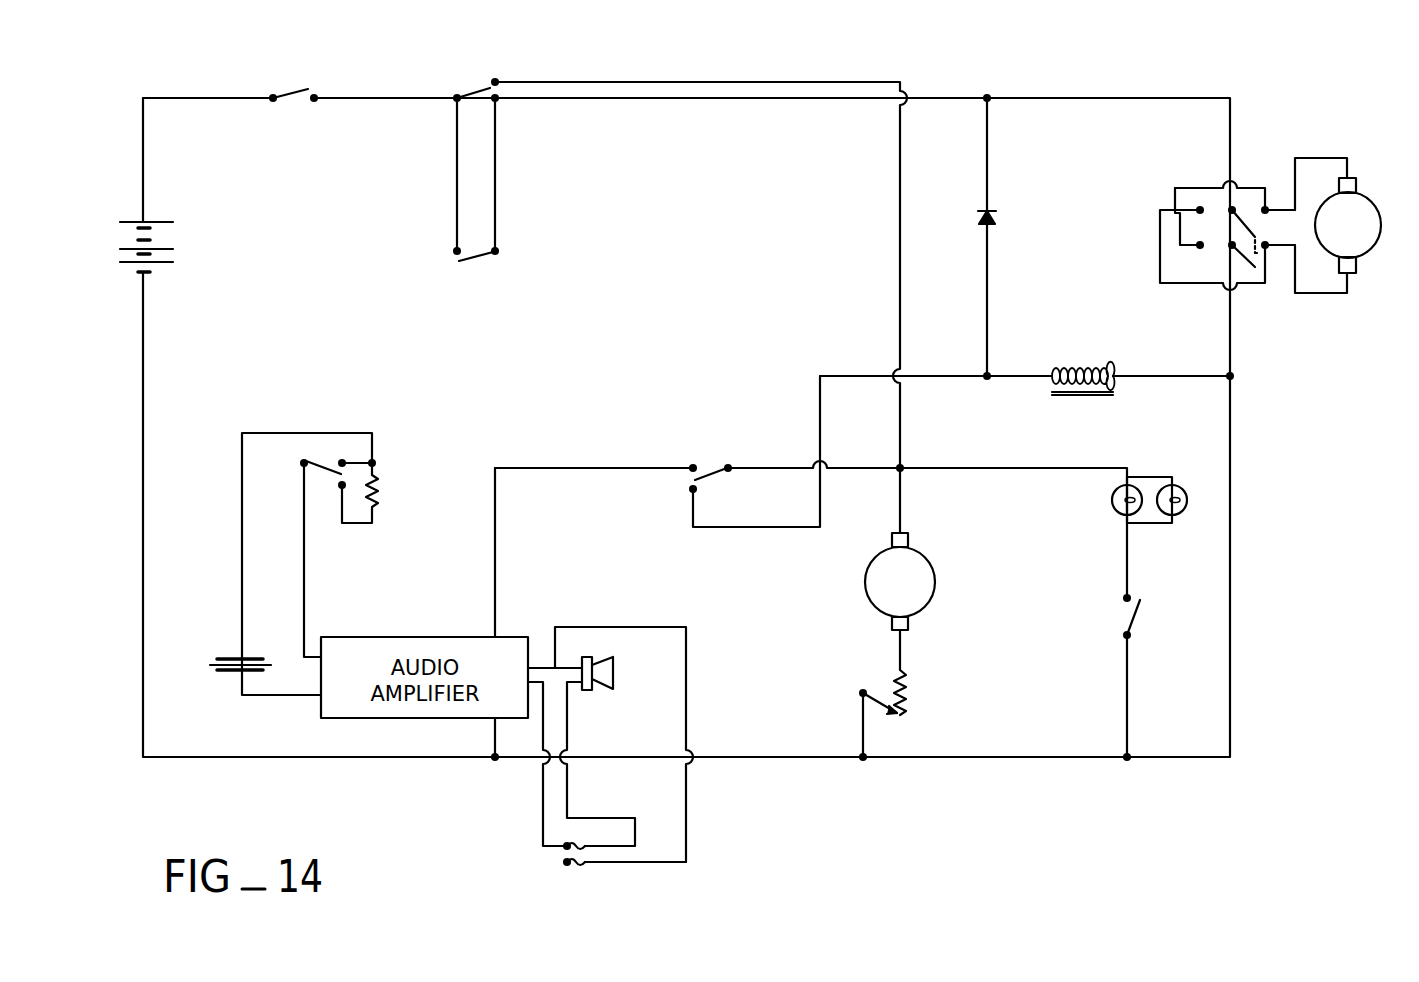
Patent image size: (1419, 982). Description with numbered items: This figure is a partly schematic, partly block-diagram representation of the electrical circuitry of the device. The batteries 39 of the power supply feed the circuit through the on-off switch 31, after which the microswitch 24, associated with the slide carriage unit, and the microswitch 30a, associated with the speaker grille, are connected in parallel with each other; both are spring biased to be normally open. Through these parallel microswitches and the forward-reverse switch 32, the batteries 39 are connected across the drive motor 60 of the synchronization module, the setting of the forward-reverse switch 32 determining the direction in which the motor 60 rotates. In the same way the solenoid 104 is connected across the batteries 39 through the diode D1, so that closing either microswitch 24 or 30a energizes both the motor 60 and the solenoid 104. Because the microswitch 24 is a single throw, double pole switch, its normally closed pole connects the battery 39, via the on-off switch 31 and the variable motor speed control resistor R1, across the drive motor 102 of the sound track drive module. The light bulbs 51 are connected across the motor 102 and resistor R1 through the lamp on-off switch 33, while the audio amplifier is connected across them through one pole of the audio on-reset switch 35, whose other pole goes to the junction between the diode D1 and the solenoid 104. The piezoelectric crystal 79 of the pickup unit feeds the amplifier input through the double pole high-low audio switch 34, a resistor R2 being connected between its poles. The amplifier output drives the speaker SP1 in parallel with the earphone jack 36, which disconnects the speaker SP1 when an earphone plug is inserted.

The batteries 39 is at (175, 233).
The on-off switch 31 is at (293, 95).
The microswitch 24 is at (473, 93).
The microswitch 30a is at (470, 258).
The diode D1 is at (995, 220).
The solenoid 104 is at (1095, 370).
The forward-reverse switch 32 is at (1227, 230).
The drive motor 60 is at (1367, 250).
The audio on-reset switch 35 is at (712, 467).
The drive motor 102 is at (933, 600).
The variable motor speed control resistor R1 is at (908, 690).
The light bulbs 51 is at (1133, 515).
The lamp on-off switch 33 is at (1137, 618).
The high-low audio switch 34 is at (328, 463).
The resistor R2 is at (378, 483).
The piezoelectric crystal 79 is at (220, 658).
The speaker SP1 is at (595, 678).
The earphone jack 36 is at (558, 858).